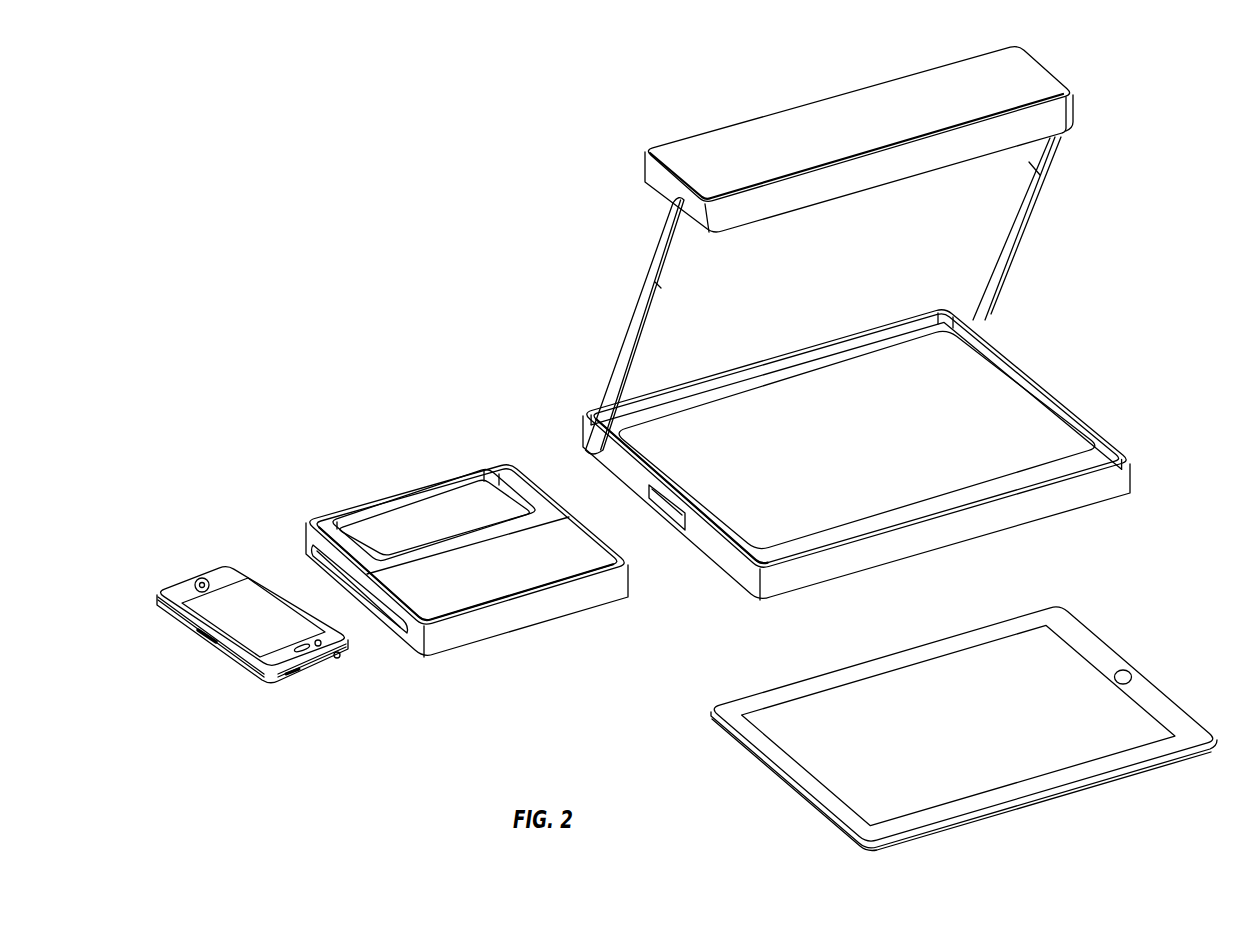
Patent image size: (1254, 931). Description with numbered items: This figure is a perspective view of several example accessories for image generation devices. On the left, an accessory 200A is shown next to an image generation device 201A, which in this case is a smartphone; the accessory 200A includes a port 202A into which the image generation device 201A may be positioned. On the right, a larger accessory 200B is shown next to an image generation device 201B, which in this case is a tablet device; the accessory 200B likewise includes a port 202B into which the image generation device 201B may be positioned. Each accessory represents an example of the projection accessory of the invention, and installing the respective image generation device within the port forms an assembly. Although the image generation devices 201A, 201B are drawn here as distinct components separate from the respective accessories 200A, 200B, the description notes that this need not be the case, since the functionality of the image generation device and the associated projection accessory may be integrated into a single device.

The accessory 200A is at (467, 538).
The port 202A is at (485, 521).
The accessory 200B is at (856, 321).
The port 202B is at (869, 393).
The image generation device 201A is at (192, 575).
The image generation device 201B is at (1087, 625).